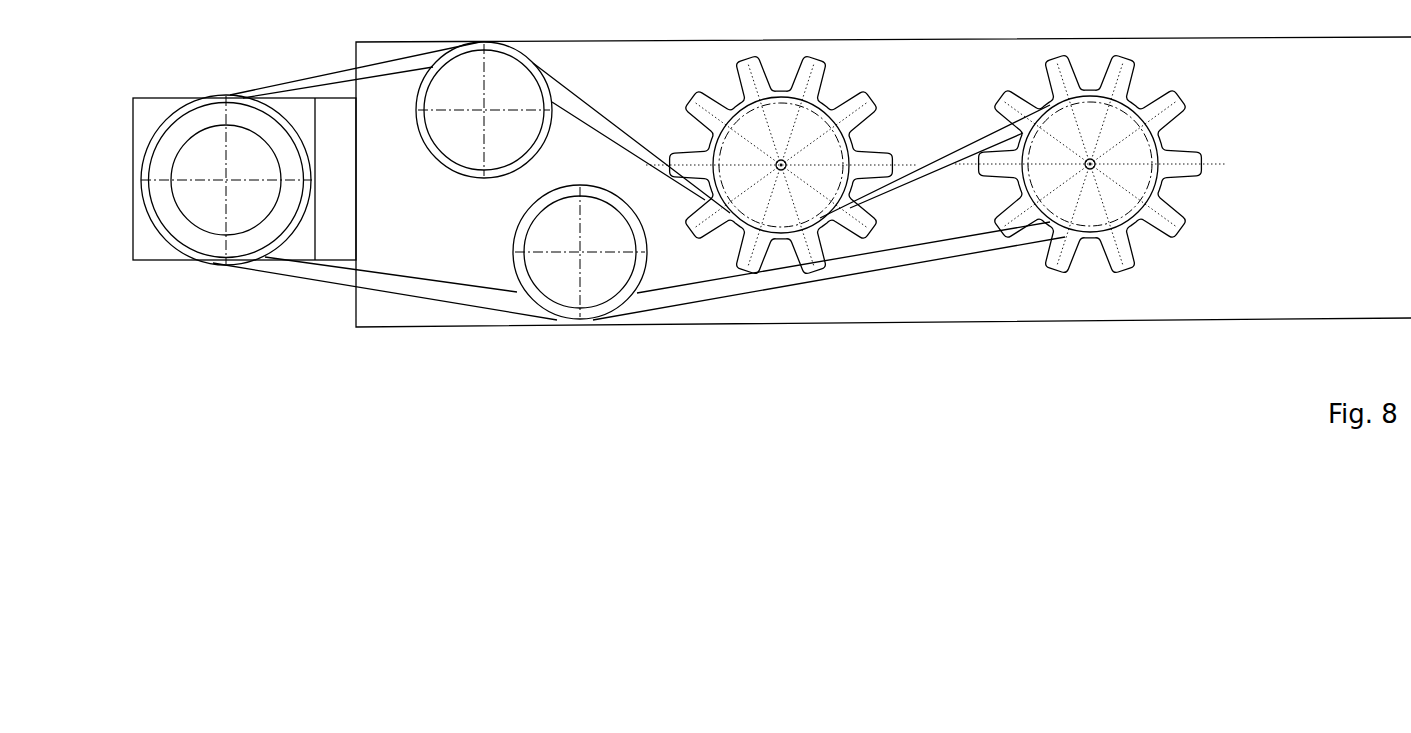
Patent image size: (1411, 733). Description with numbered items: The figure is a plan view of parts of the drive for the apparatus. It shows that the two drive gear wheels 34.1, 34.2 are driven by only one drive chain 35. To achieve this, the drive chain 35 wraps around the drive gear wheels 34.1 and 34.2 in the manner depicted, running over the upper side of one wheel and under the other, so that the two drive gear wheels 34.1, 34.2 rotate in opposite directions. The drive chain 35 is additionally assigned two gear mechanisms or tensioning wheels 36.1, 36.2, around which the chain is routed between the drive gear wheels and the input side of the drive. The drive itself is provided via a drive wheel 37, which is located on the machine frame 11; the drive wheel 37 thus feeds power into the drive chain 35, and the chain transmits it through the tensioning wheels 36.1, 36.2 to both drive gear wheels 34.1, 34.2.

The machine frame 11 is at (342, 202).
The drive wheel 37 is at (186, 110).
The tensioning wheel 36.2 is at (472, 157).
The tensioning wheel 36.1 is at (523, 260).
The drive gear wheel 34.2 is at (873, 95).
The drive gear wheel 34.1 is at (1190, 100).
The drive chain 35 is at (929, 248).